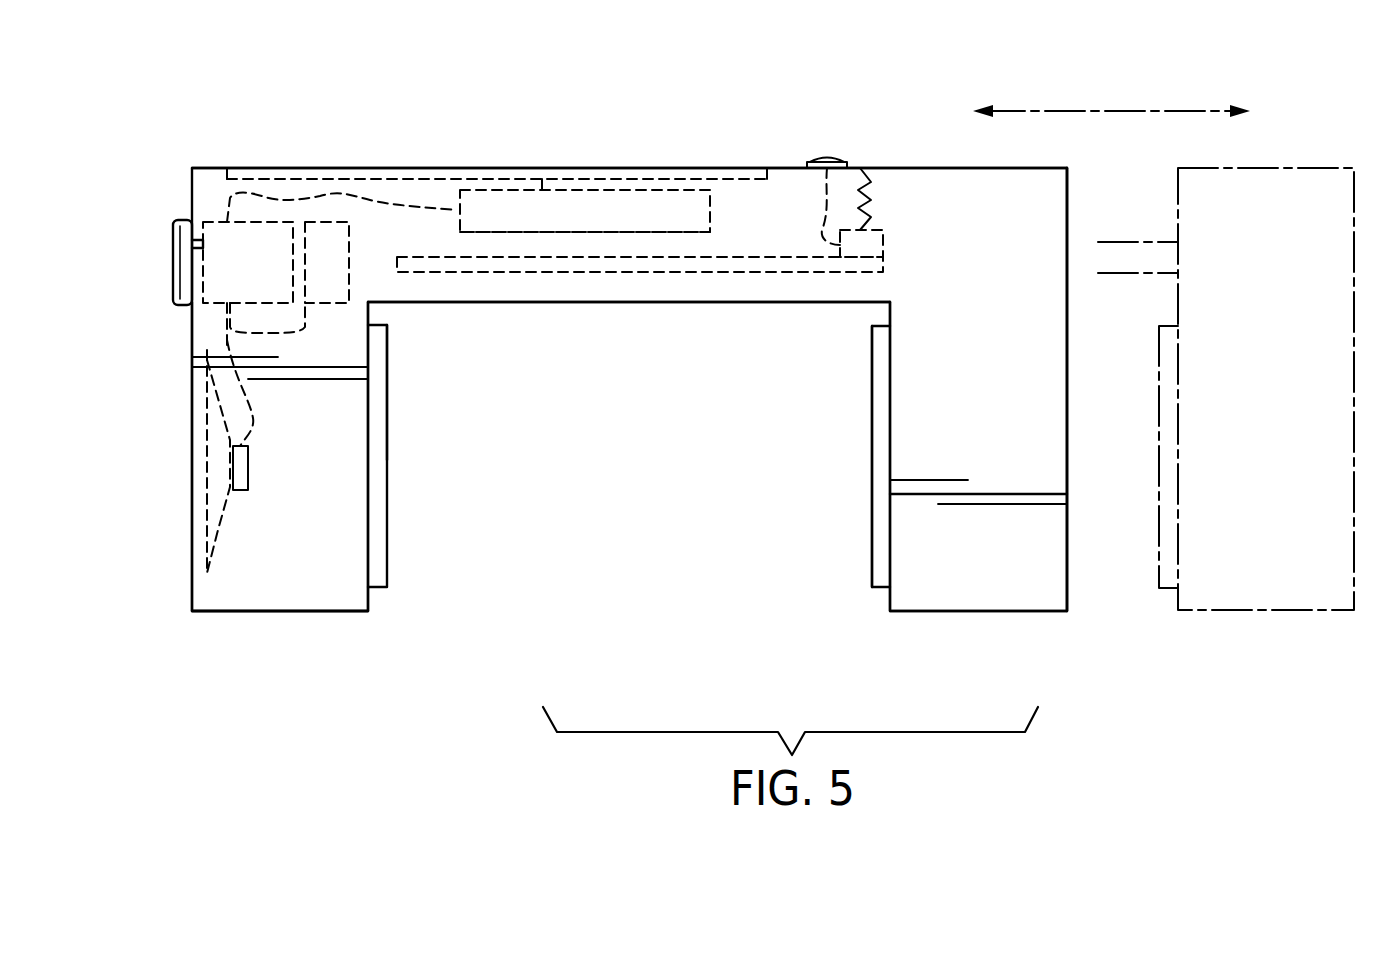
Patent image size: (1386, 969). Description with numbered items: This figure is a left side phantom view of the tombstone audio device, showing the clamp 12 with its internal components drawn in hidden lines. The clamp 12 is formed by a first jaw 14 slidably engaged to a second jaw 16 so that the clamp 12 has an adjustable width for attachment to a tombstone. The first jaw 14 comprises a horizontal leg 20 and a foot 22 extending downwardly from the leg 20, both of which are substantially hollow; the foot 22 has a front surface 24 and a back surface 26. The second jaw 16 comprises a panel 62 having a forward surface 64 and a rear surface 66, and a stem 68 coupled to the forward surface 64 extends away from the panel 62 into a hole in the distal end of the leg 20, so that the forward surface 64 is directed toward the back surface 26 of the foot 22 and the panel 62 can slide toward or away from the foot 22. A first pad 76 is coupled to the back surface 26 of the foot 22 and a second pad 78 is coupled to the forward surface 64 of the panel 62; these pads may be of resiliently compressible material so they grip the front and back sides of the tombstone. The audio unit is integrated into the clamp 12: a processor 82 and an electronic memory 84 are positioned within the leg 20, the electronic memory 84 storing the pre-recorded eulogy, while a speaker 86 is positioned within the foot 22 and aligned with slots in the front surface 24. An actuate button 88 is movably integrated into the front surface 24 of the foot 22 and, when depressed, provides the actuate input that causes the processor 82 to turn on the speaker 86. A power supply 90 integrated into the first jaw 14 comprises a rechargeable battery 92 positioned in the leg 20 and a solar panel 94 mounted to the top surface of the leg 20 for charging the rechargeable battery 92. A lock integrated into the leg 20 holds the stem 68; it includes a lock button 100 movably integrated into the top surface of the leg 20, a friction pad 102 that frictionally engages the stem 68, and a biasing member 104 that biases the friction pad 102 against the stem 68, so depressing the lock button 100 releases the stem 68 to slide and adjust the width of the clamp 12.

The clamp 12 is at (529, 112).
The first jaw 14 is at (286, 636).
The second jaw 16 is at (1082, 637).
The leg 20 is at (753, 302).
The foot 22 is at (192, 612).
The front surface 24 is at (192, 533).
The back surface 26 is at (370, 557).
The panel 62 is at (890, 613).
The forward surface 64 is at (890, 502).
The rear surface 66 is at (1066, 465).
The stem 68 is at (587, 272).
The first pad 76 is at (387, 456).
The second pad 78 is at (872, 567).
The processor 82 is at (205, 222).
The electronic memory 84 is at (328, 222).
The speaker 86 is at (218, 530).
The actuate button 88 is at (175, 250).
The power supply 90 is at (446, 192).
The rechargeable battery 92 is at (498, 232).
The solar panel 94 is at (665, 180).
The lock button 100 is at (822, 158).
The friction pad 102 is at (883, 228).
The biasing member 104 is at (873, 167).